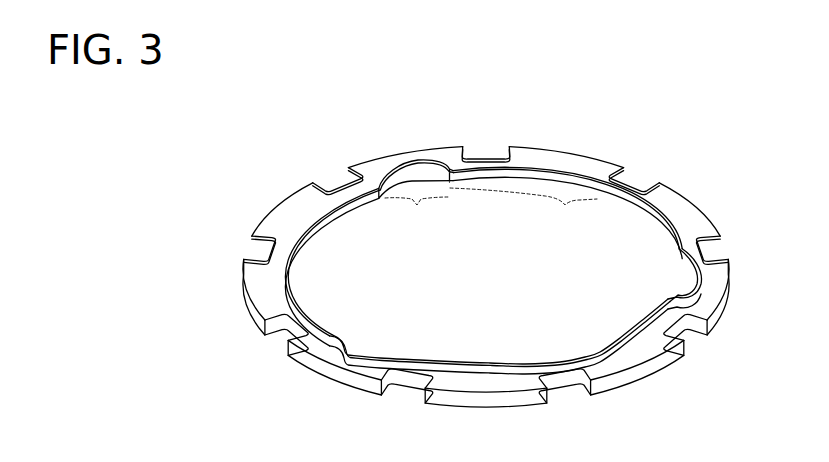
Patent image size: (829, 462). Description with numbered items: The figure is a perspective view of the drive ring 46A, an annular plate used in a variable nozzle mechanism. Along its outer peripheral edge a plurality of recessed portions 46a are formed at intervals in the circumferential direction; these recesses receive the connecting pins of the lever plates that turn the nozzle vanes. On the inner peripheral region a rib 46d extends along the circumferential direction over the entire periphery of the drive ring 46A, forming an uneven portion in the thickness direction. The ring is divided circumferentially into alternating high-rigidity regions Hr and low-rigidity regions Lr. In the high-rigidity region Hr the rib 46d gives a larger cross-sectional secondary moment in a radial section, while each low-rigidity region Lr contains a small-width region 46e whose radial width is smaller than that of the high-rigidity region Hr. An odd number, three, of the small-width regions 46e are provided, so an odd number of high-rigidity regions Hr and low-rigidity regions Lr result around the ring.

The drive ring 46A is at (486, 241).
The recessed portion 46a is at (637, 173).
The rib 46d is at (398, 159).
The small-width region 46e is at (677, 283).
The low-rigidity region Lr is at (422, 219).
The high-rigidity region Hr is at (565, 219).